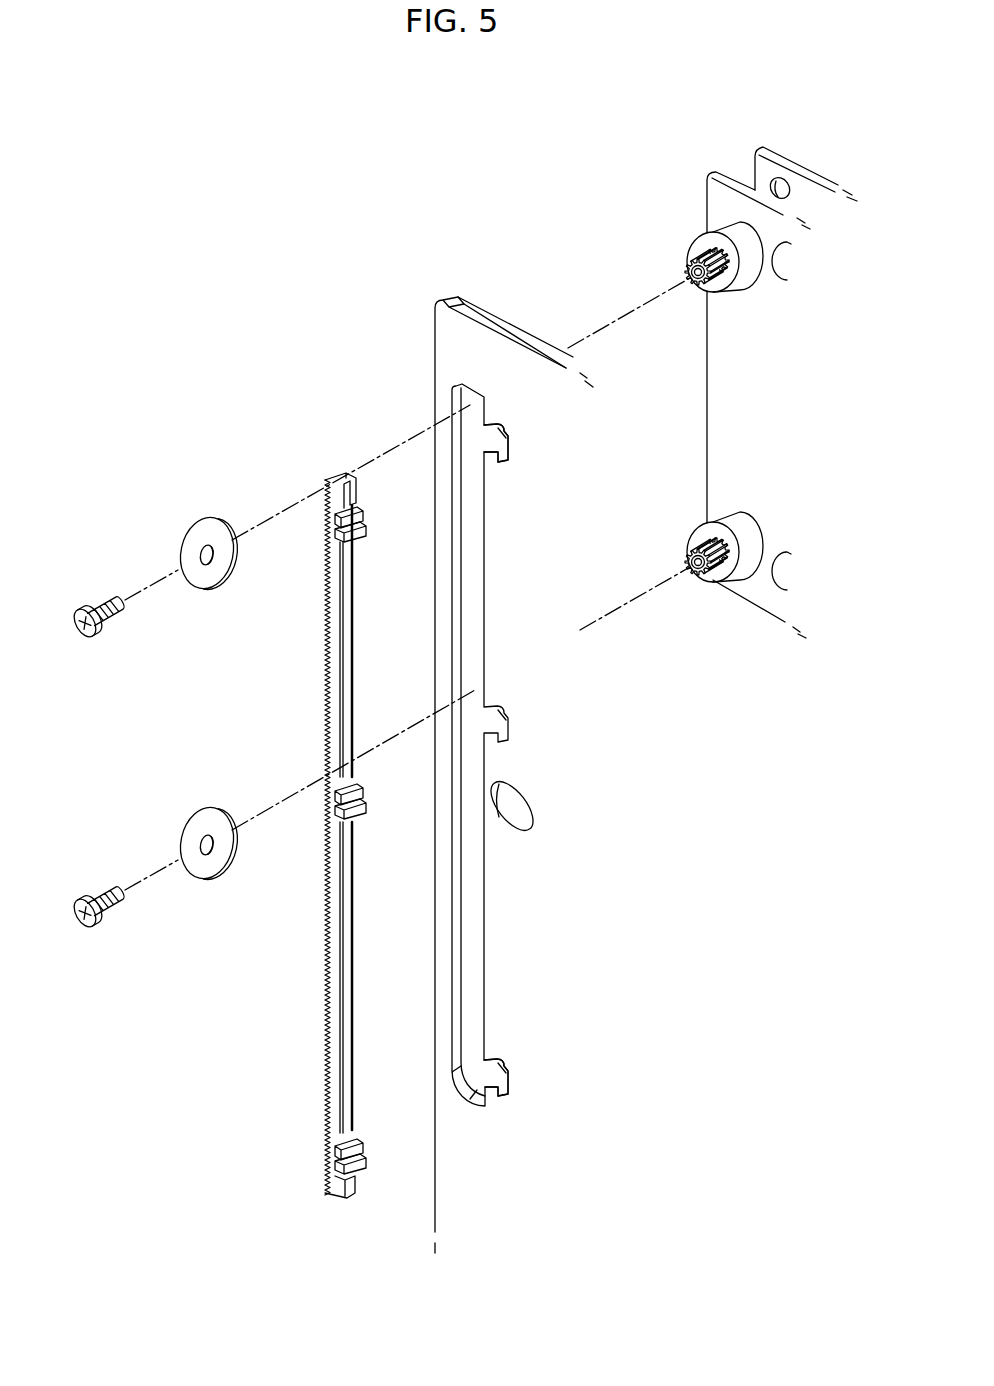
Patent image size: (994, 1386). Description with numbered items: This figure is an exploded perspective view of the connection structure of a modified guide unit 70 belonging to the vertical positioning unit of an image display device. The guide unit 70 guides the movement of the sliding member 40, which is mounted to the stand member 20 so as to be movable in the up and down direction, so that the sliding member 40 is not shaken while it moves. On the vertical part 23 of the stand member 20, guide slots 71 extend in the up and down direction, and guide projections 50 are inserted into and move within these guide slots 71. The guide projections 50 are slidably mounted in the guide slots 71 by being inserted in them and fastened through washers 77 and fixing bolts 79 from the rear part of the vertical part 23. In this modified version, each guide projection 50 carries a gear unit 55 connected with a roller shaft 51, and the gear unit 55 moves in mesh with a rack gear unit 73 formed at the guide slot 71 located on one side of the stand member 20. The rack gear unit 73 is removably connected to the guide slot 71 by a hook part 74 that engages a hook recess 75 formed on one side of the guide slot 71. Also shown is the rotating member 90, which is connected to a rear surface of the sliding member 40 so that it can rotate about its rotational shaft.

The stand member 20 is at (415, 318).
The vertical part 23 is at (497, 360).
The sliding member 40 is at (707, 411).
The guide projection 50 is at (760, 290).
The roller shaft 51 is at (693, 283).
The gear unit 55 is at (688, 250).
The guide unit 70 is at (480, 194).
The guide slot 71 is at (460, 556).
The rack gear unit 73 is at (326, 688).
The hook part 74 is at (367, 798).
The hook recess 75 is at (505, 728).
The washer 77 is at (188, 536).
The fixing bolt 79 is at (80, 610).
The rotating member 90 is at (807, 188).